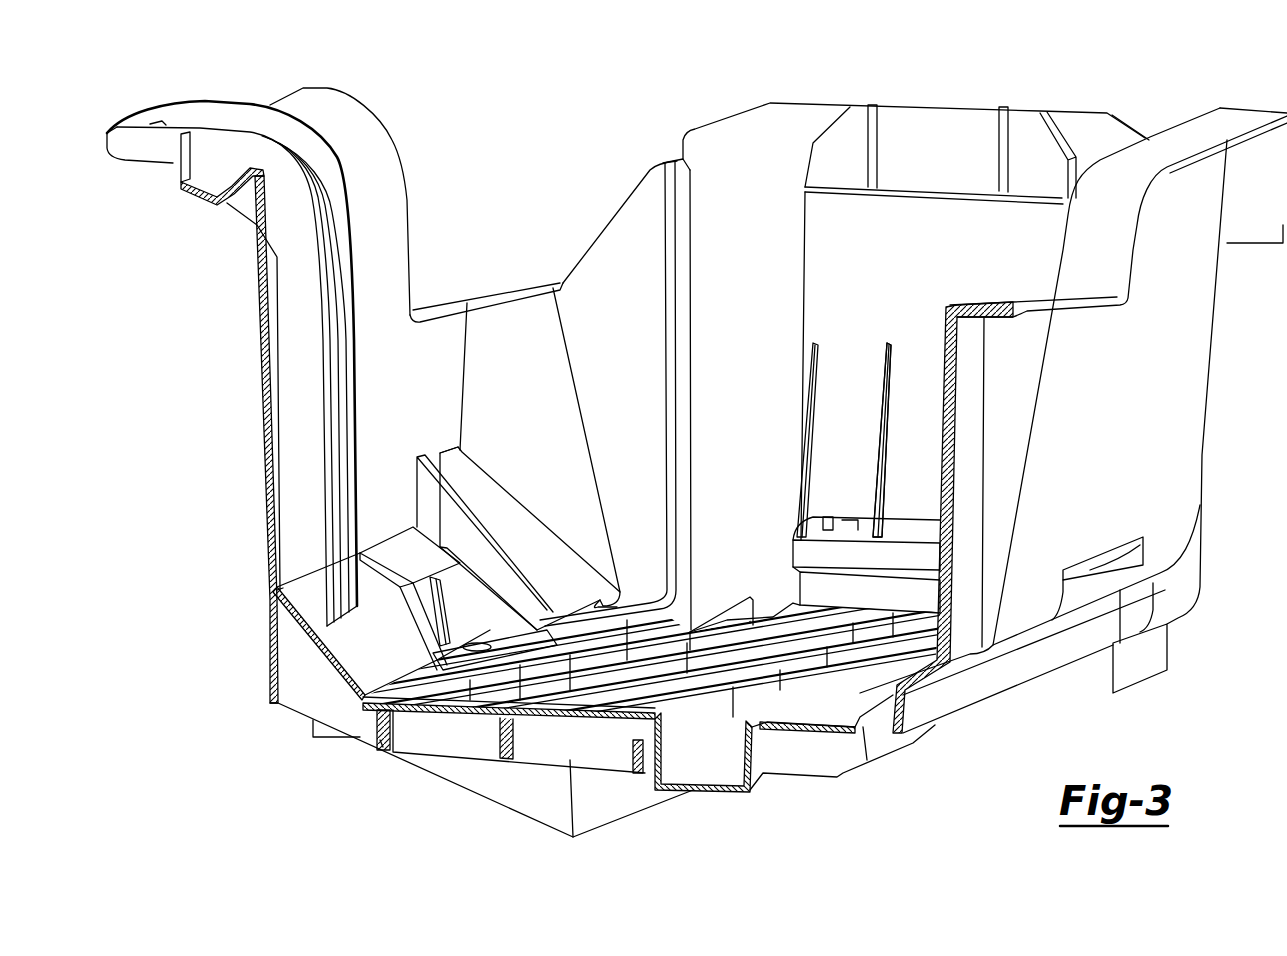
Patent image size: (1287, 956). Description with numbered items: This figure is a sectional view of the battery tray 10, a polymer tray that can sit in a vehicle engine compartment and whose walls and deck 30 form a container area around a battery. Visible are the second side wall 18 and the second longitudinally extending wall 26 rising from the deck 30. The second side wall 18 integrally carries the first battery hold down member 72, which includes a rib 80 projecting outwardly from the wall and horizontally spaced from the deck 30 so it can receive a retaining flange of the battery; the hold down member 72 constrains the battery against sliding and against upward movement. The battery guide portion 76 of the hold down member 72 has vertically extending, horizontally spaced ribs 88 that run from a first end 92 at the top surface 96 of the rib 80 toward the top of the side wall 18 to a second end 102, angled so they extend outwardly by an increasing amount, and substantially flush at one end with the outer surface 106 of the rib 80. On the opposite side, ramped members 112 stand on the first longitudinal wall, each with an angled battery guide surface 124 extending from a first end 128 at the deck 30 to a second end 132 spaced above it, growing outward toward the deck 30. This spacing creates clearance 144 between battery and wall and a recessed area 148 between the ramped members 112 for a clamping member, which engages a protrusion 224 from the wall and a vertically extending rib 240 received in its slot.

The battery tray 10 is at (1187, 86).
The second side wall 18 is at (941, 214).
The second longitudinally extending wall 26 is at (1163, 388).
The deck 30 is at (810, 718).
The first battery hold down member 72 is at (816, 527).
The battery guide portion 76 is at (799, 409).
The rib 80 is at (805, 556).
The ribs 88 is at (887, 460).
The first end 92 is at (822, 527).
The top surface 96 is at (850, 527).
The second end 102 is at (889, 342).
The outer surface 106 is at (855, 563).
The ramped members 112 is at (521, 491).
The angled battery guide surface 124 is at (360, 664).
The first end 128 is at (612, 602).
The second end 132 is at (455, 445).
The clearance 144 is at (449, 348).
The recessed area 148 is at (489, 323).
The protrusion 224 is at (396, 556).
The vertically extending rib 240 is at (443, 594).